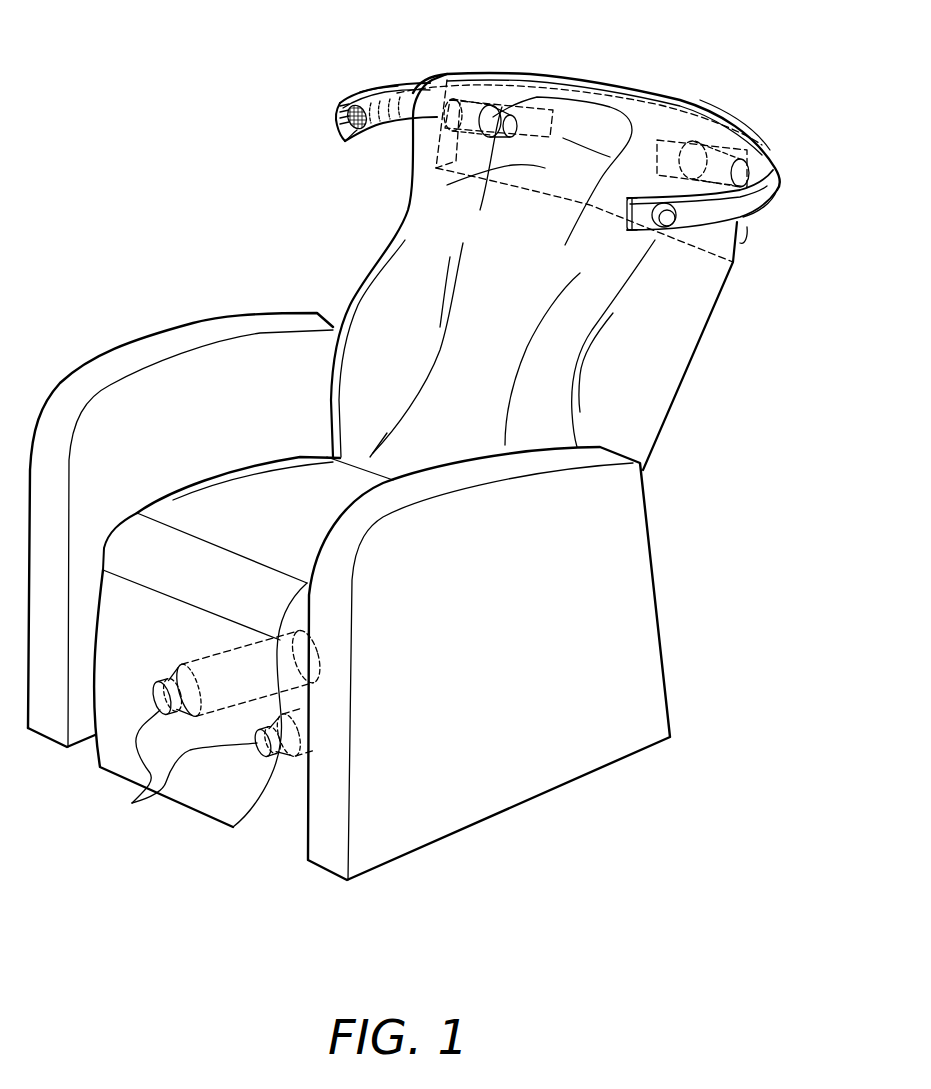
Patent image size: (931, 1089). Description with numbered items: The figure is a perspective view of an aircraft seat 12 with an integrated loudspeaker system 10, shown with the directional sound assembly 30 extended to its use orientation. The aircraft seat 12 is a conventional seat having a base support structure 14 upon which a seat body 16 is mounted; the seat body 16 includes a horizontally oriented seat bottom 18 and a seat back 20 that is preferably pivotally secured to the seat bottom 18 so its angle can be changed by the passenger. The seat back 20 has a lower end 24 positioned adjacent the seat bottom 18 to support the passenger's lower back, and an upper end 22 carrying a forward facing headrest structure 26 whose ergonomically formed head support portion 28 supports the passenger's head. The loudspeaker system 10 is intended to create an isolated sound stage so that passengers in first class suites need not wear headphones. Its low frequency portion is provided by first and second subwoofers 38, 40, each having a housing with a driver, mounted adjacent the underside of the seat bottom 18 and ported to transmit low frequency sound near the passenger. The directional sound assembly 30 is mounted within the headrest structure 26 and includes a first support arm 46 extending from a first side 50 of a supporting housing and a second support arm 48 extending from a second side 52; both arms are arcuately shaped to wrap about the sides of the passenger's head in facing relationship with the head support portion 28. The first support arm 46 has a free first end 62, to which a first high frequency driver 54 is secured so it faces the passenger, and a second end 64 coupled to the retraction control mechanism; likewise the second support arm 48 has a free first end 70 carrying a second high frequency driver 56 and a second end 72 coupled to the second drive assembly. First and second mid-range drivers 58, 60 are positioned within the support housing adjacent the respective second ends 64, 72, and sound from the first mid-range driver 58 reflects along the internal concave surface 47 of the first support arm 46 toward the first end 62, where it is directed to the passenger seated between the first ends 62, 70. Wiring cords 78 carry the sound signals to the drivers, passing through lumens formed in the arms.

The loudspeaker system 10 is at (280, 205).
The aircraft seat 12 is at (693, 317).
The base support structure 14 is at (650, 746).
The seat body 16 is at (650, 397).
The seat bottom 18 is at (333, 490).
The seat back 20 is at (383, 322).
The upper end 22 is at (660, 137).
The lower end 24 is at (340, 417).
The headrest structure 26 is at (608, 123).
The head support portion 28 is at (447, 185).
The directional sound assembly 30 is at (793, 229).
The first subwoofer 38 is at (240, 643).
The second subwoofer 40 is at (297, 708).
The first support arm 46 is at (363, 90).
The internal concave surface 47 is at (372, 91).
The second support arm 48 is at (740, 240).
The first side 50 is at (447, 73).
The second side 52 is at (733, 123).
The first high frequency driver 54 is at (337, 113).
The second high frequency driver 56 is at (666, 226).
The first mid-range driver 58 is at (502, 107).
The second mid-range driver 60 is at (672, 145).
The free first end 62 is at (363, 133).
The second end 64 is at (388, 97).
The free first end 70 is at (638, 230).
The second end 72 is at (777, 173).
The cords 78 is at (138, 798).